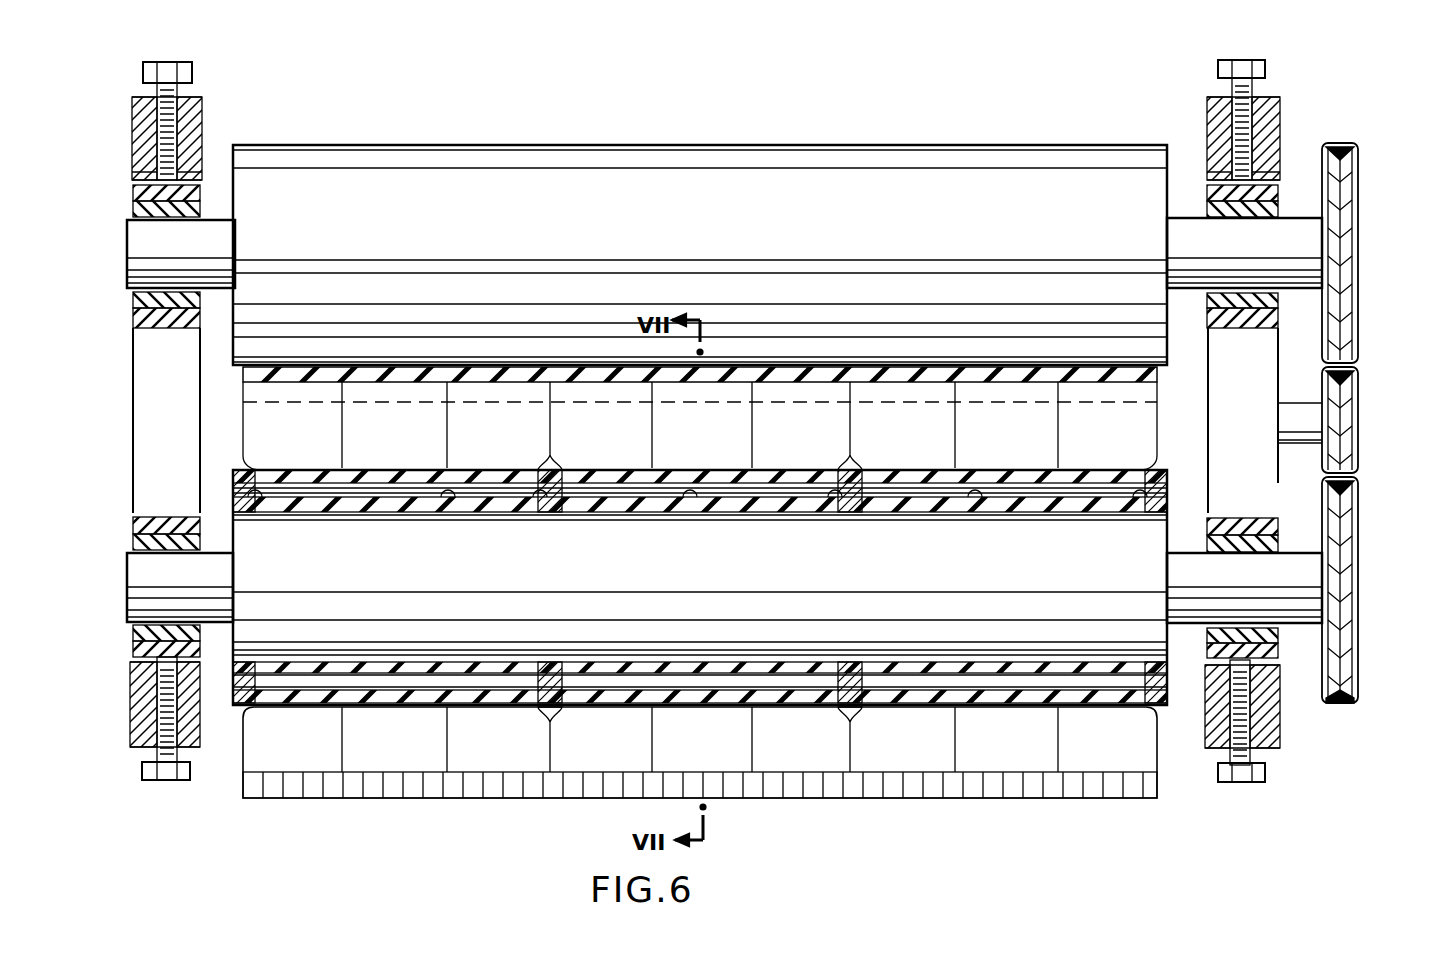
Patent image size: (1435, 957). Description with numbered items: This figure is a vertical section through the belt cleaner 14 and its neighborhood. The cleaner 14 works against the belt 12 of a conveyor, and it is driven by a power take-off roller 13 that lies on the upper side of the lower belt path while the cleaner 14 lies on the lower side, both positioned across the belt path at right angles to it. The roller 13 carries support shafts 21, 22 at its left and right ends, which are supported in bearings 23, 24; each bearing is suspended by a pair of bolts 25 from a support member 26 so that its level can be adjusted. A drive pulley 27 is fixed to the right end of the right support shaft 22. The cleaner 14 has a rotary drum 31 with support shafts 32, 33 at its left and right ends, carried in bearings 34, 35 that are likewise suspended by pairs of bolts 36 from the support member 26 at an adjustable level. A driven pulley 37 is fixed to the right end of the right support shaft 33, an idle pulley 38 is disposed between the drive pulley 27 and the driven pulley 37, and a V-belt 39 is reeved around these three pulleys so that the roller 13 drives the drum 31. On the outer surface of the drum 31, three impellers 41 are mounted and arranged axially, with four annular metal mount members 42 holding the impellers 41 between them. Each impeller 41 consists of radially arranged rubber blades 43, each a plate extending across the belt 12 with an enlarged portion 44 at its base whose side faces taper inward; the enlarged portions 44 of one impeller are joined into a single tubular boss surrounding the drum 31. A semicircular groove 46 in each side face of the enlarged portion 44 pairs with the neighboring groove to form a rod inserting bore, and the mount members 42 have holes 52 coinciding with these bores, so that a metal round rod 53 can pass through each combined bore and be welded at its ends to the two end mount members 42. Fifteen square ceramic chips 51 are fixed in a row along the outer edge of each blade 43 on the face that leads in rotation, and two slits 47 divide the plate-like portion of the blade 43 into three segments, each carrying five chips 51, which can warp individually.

The belt 12 is at (1160, 374).
The power take-off roller 13 is at (762, 162).
The cleaner 14 is at (1170, 795).
The support shaft 21 is at (140, 258).
The support shaft 22 is at (1304, 292).
The bearing 23 is at (160, 320).
The bearing 24 is at (1248, 322).
The bolt 25 is at (142, 72).
The support member 26 is at (144, 118).
The drive pulley 27 is at (1360, 208).
The rotary drum 31 is at (710, 599).
The support shaft 32 is at (140, 590).
The support shaft 33 is at (1294, 555).
The bearing 34 is at (168, 525).
The bearing 35 is at (1243, 525).
The bolt 36 is at (146, 776).
The driven pulley 37 is at (1358, 538).
The idle pulley 38 is at (1357, 426).
The V-belt 39 is at (1340, 705).
The impeller 41 is at (392, 803).
The annular mount member 42 is at (246, 512).
The rubber blade 43 is at (404, 446).
The enlarged portion 44 is at (404, 500).
The groove 46 is at (447, 505).
The slit 47 is at (652, 432).
The ceramic chip 51 is at (872, 403).
The hole 52 is at (268, 505).
The metal round rod 53 is at (612, 512).